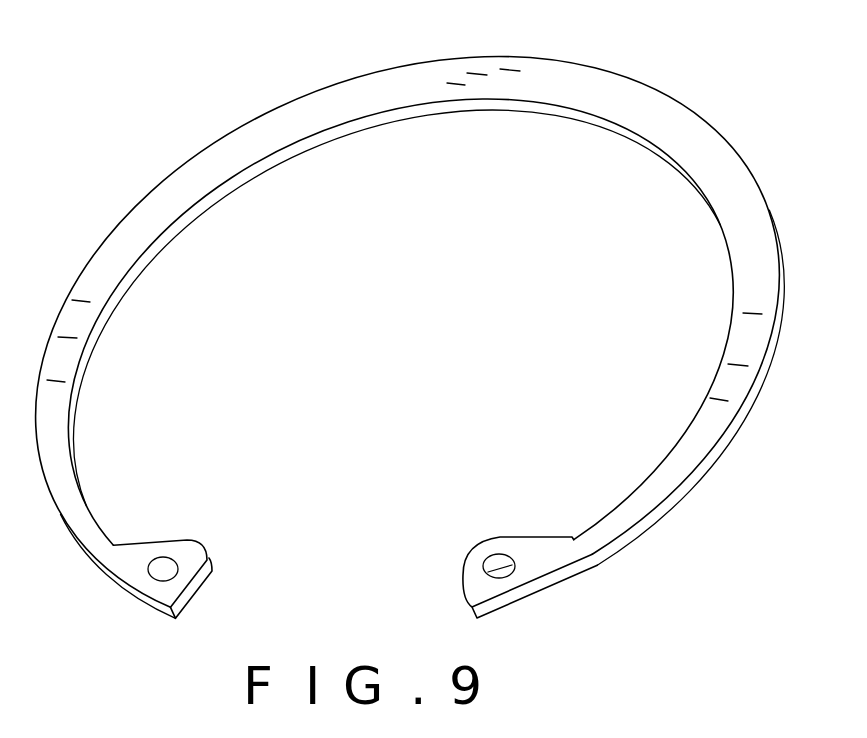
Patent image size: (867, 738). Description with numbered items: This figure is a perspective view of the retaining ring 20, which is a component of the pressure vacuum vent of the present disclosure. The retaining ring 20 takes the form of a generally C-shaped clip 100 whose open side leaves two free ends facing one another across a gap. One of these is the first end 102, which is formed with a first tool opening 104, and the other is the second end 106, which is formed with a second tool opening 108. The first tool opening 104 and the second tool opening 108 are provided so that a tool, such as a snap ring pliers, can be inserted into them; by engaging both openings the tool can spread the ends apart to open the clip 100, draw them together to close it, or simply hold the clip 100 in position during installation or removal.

The retaining ring 20 is at (305, 73).
The C-shaped clip 100 is at (679, 524).
The first end 102 is at (167, 539).
The first tool opening 104 is at (157, 580).
The second end 106 is at (463, 593).
The second tool opening 108 is at (499, 560).